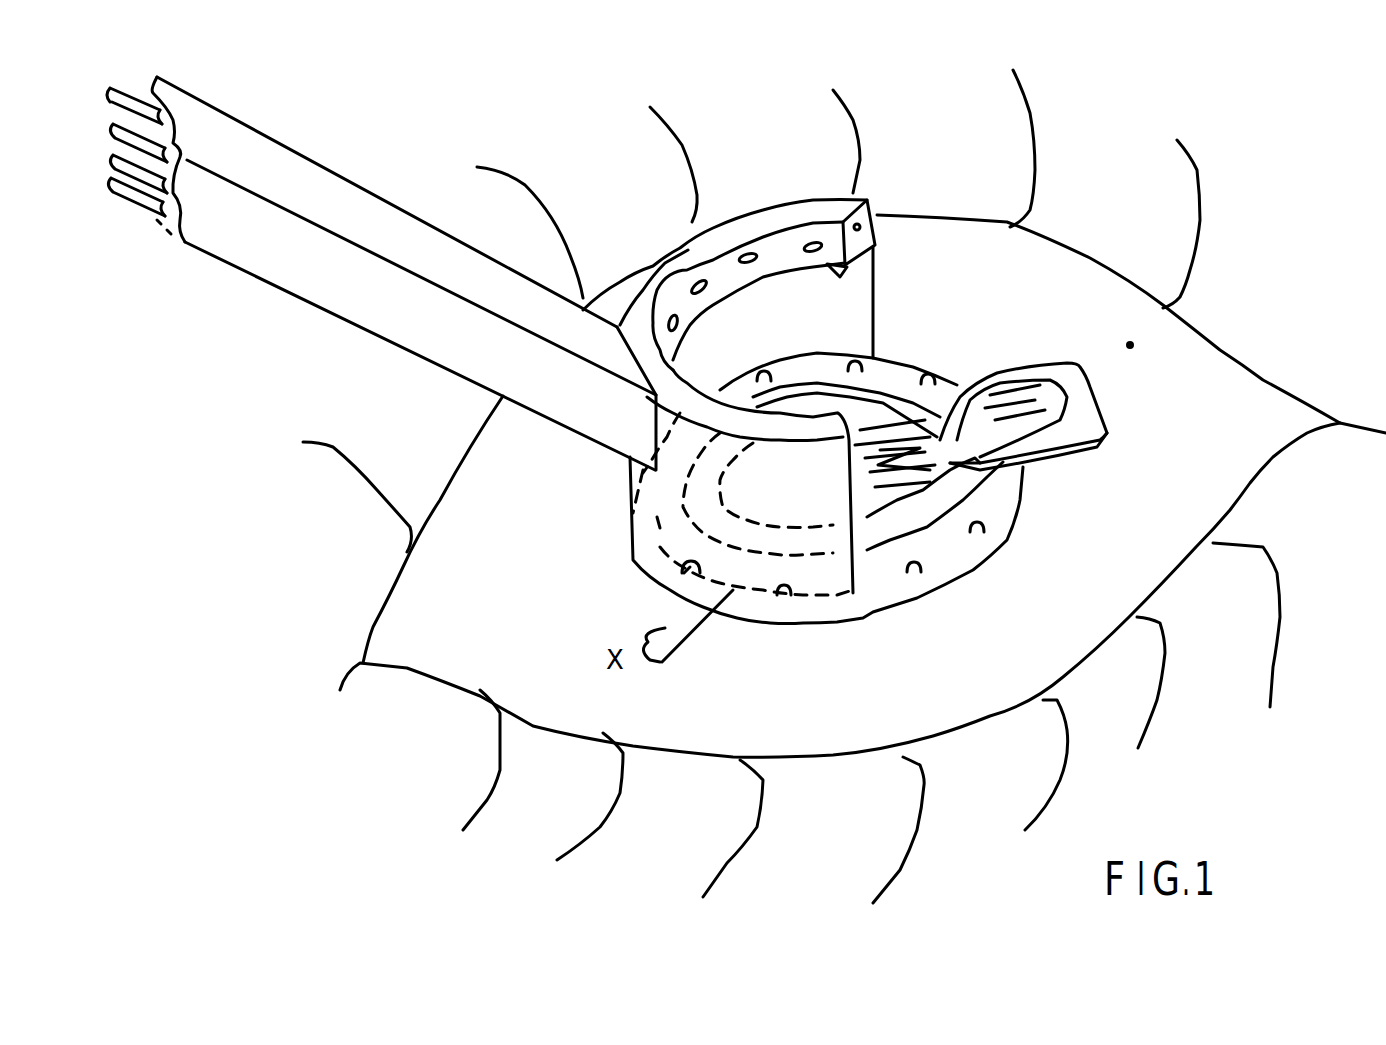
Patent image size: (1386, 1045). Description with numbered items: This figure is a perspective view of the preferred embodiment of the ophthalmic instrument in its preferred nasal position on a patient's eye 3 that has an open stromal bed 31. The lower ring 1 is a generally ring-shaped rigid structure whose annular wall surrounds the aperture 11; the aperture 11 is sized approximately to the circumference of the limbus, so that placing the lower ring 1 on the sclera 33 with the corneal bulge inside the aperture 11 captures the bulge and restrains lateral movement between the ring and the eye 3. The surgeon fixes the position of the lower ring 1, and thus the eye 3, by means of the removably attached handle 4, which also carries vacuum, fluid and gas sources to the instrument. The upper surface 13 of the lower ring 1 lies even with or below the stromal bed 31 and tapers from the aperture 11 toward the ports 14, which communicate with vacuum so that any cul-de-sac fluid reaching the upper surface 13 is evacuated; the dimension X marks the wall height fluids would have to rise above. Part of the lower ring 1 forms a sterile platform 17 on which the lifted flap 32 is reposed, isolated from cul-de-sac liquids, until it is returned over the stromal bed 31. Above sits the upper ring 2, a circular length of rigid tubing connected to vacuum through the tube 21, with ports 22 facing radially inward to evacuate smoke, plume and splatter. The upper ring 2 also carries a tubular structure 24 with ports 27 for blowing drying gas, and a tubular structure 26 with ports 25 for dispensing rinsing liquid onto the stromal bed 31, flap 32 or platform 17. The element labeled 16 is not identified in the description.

The lower ring 1 is at (863, 608).
The upper ring 2 is at (778, 217).
The eye 3 is at (1090, 260).
The handle 4 is at (330, 177).
The aperture 11 is at (917, 530).
The upper surface 13 is at (663, 522).
The ports 14 is at (688, 568).
The tube 16 is at (115, 194).
The platform 17 is at (1070, 443).
The tube 21 is at (117, 167).
The ports 22 is at (699, 289).
The tubular structure 24 is at (112, 101).
The ports 25 is at (847, 267).
The tubular structure 26 is at (115, 136).
The ports 27 is at (868, 202).
The stromal bed 31 is at (880, 483).
The flap 32 is at (1035, 418).
The sclera 33 is at (1130, 345).